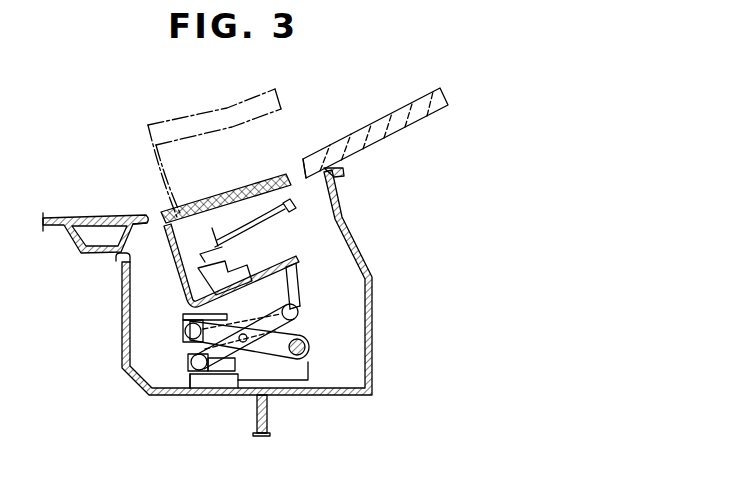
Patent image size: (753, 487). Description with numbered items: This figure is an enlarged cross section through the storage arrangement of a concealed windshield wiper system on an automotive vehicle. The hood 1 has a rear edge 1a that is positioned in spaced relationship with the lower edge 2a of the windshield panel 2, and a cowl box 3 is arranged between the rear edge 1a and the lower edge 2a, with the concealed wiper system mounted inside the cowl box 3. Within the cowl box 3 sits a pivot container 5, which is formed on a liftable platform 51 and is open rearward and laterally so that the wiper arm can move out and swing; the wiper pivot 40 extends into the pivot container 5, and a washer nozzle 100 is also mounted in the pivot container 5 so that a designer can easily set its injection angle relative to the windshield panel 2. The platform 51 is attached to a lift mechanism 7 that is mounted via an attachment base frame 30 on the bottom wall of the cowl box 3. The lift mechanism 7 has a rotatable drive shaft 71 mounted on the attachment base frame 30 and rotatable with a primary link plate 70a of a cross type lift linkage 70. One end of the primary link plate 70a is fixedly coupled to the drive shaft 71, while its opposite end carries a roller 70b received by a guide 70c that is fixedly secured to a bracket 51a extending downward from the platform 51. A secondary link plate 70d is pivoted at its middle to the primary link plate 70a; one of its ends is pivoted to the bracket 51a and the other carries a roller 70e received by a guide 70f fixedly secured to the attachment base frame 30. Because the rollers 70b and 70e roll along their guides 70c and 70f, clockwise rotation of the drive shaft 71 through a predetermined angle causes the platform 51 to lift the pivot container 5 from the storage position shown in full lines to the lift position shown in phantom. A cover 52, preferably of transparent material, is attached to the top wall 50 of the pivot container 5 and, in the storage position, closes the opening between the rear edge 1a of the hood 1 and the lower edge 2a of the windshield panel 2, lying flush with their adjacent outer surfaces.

The hood 1 is at (75, 217).
The rear edge 1a is at (148, 216).
The windshield panel 2 is at (392, 120).
The lower edge 2a is at (294, 168).
The cowl box 3 is at (136, 383).
The pivot container 5 is at (300, 241).
The lift mechanism 7 is at (311, 328).
The attachment base frame 30 is at (288, 395).
The wiper pivot 40 is at (186, 290).
The top wall 50 is at (343, 194).
The liftable platform 51 is at (294, 277).
The bracket 51a is at (294, 297).
The cover 52 is at (283, 171).
The cross type lift linkage 70 is at (222, 380).
The primary link plate 70a is at (300, 316).
The roller 70b is at (183, 335).
The guide 70c is at (200, 316).
The secondary link plate 70d is at (243, 390).
The roller 70e is at (192, 380).
The guide 70f is at (188, 360).
The drive shaft 71 is at (311, 366).
The washer nozzle 100 is at (245, 238).